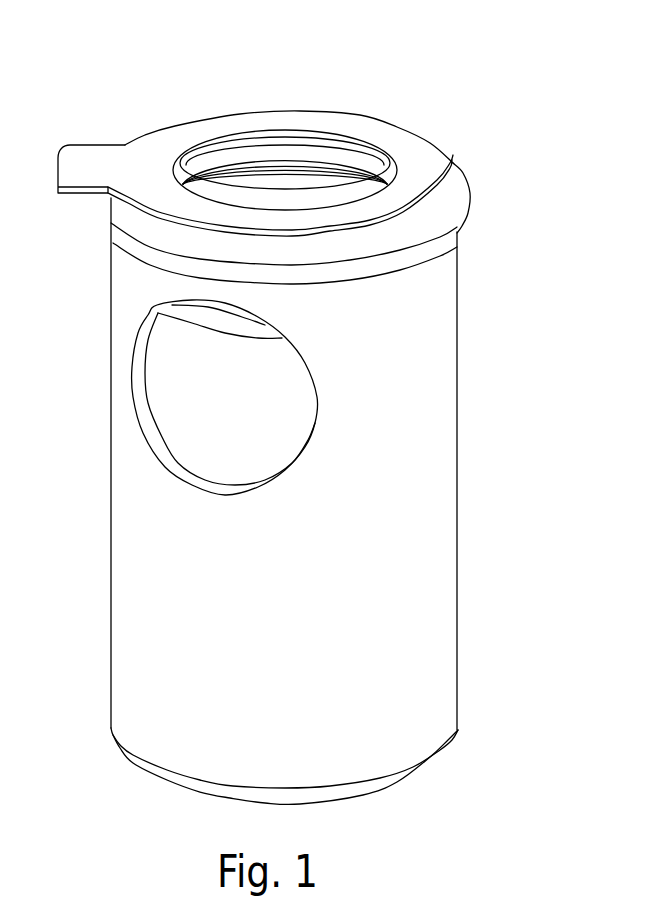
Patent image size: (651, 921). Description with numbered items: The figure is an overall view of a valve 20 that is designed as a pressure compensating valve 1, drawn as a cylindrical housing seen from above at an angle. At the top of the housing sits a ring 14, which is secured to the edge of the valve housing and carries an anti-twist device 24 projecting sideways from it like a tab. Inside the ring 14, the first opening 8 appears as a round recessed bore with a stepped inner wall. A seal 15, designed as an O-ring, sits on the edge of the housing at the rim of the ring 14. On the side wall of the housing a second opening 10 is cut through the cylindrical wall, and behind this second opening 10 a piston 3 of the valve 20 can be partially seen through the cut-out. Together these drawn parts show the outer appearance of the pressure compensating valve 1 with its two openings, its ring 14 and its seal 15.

The pressure compensating valve 1 is at (308, 402).
The valve 20 is at (282, 425).
The ring 14 is at (178, 143).
The first opening 8 is at (303, 179).
The seal 15 is at (472, 184).
The anti-twist device 24 is at (87, 175).
The piston 3 is at (215, 369).
The second opening 10 is at (175, 448).